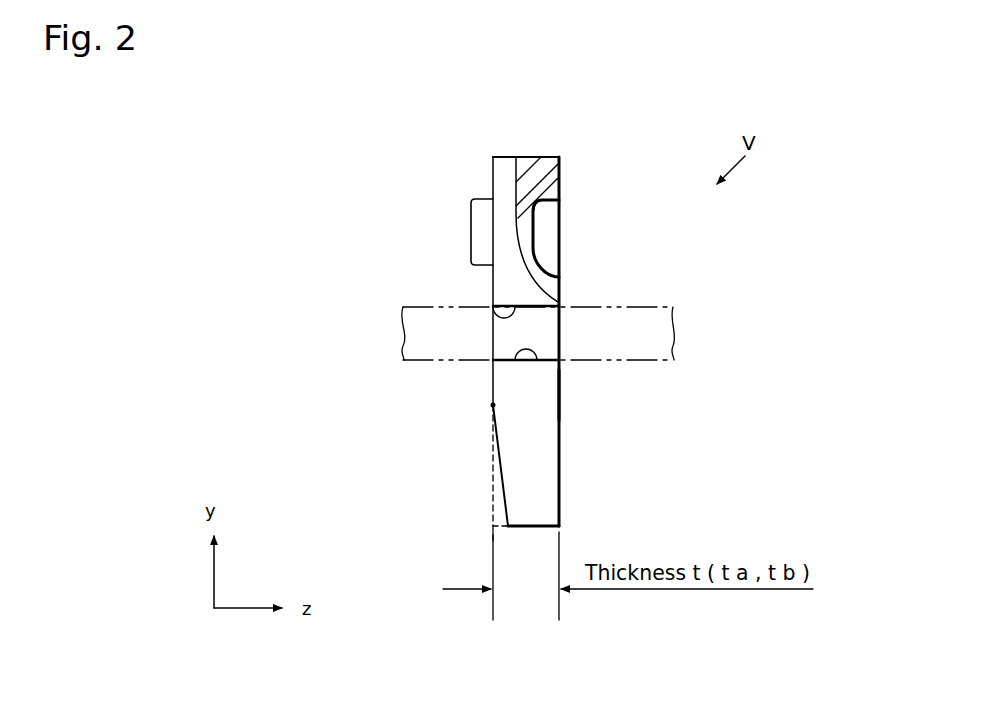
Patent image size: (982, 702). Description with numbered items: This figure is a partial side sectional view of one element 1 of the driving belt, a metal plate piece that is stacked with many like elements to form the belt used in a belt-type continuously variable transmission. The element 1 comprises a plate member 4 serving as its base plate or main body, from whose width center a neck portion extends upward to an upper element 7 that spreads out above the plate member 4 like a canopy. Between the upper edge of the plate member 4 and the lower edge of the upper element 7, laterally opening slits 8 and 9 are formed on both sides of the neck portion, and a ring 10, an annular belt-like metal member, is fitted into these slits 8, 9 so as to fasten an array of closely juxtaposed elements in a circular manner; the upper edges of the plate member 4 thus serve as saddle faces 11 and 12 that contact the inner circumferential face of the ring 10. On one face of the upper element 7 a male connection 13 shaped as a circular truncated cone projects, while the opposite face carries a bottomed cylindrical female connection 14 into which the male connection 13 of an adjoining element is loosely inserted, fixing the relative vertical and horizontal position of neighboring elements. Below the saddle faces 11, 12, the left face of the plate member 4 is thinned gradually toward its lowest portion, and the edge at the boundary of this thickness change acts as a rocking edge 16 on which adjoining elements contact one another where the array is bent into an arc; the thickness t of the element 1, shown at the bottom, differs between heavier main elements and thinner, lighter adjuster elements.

The element 1 is at (562, 330).
The plate member 4 is at (560, 393).
The upper element 7 is at (493, 158).
The slit 8 is at (474, 321).
The slit 9 is at (496, 318).
The ring 10 is at (640, 358).
The saddle face 11 is at (484, 451).
The saddle face 12 is at (500, 473).
The male connection 13 is at (477, 203).
The female connection 14 is at (560, 226).
The rocking edge 16 is at (492, 405).